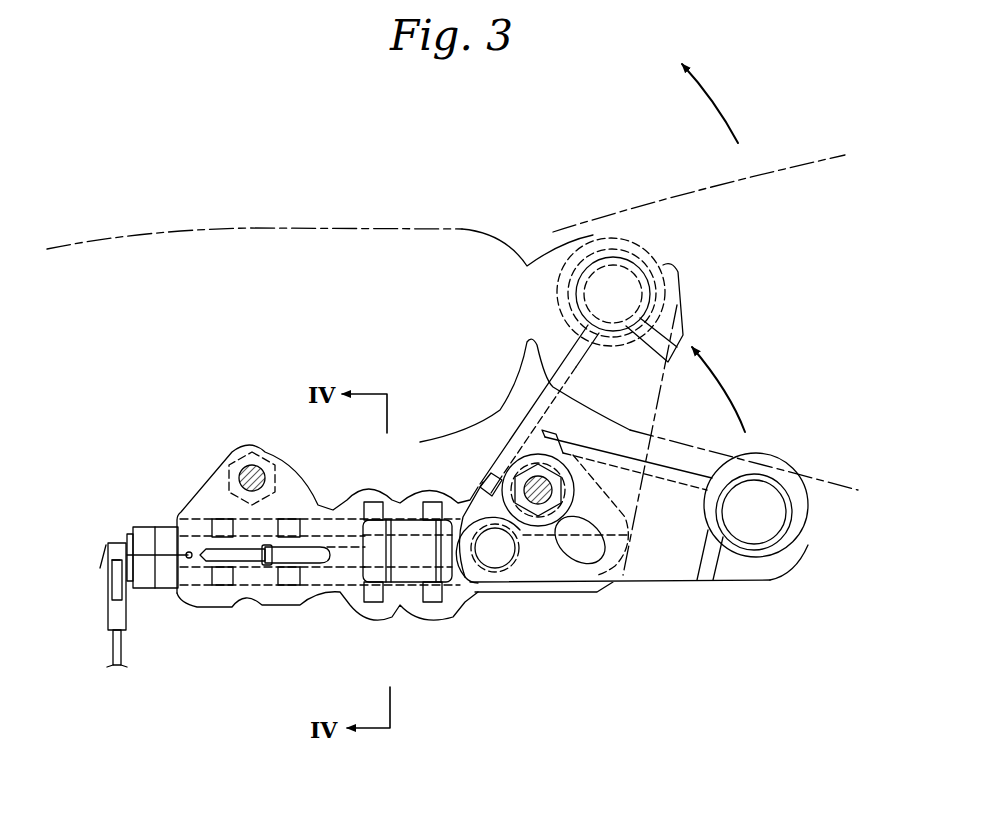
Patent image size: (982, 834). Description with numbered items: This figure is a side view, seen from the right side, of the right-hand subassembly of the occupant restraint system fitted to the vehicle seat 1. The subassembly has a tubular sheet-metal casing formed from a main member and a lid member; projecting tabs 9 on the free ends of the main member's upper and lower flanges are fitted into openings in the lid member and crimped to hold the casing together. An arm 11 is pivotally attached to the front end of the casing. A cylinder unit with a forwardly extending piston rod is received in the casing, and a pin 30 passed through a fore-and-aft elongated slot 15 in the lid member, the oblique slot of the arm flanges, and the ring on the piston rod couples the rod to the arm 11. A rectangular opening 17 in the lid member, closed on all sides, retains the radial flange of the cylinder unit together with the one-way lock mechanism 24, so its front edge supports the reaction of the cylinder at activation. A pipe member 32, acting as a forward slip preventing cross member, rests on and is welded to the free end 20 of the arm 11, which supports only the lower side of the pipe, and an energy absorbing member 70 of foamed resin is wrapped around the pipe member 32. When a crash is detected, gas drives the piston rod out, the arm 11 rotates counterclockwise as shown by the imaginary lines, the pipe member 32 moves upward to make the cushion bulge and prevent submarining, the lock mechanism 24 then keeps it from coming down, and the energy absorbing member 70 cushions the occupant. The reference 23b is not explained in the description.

The vehicle seat 1 is at (682, 189).
The projecting tabs 9 is at (437, 500).
The arm 11 is at (678, 567).
The slot 15 is at (532, 563).
The rectangular opening 17 is at (352, 498).
The free end 20 is at (682, 272).
The plunger rod 23b is at (338, 598).
The lock mechanism 24 is at (413, 602).
The pin 30 is at (495, 556).
The pipe member 32 is at (635, 257).
The energy absorbing member 70 is at (580, 252).